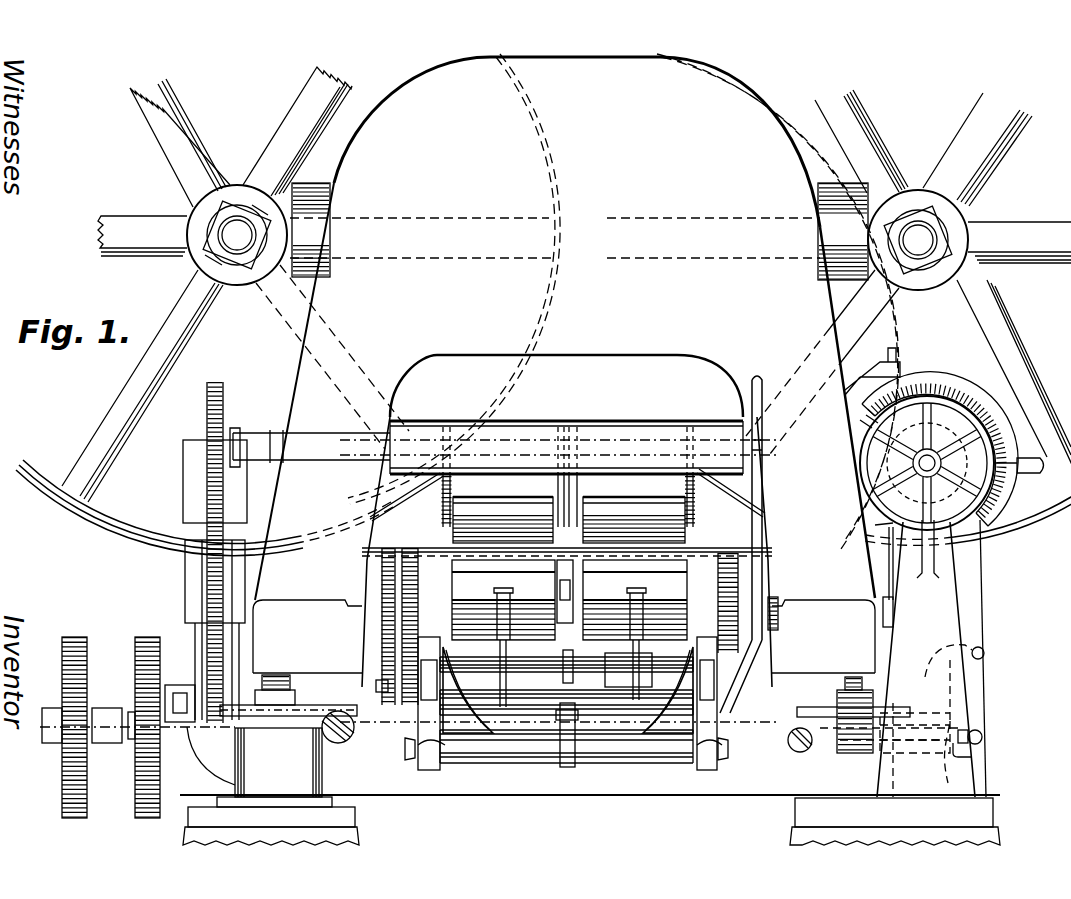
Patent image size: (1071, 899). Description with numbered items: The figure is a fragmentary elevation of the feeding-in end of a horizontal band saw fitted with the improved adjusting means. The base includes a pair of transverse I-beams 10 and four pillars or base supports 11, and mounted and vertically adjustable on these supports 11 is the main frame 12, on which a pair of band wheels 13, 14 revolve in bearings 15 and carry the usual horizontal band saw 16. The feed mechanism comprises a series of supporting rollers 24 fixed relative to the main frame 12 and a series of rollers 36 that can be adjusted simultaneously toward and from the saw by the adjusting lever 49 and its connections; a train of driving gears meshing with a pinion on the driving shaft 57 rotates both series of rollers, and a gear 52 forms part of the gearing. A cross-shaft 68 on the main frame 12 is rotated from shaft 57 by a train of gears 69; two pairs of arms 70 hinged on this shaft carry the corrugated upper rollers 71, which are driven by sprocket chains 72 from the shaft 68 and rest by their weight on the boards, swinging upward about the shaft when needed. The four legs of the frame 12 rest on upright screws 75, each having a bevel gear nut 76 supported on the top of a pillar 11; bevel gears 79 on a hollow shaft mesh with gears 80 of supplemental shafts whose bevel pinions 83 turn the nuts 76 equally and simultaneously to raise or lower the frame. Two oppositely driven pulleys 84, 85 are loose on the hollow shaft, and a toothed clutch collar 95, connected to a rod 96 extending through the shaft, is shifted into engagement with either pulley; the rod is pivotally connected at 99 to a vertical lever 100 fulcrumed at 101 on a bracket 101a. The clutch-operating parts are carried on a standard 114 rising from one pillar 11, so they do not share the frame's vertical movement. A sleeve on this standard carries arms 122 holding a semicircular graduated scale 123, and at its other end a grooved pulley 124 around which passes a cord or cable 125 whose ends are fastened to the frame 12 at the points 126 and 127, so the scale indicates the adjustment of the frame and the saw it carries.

The transverse I-beams 10 is at (560, 790).
The pillars or base supports 11 is at (358, 812).
The main frame 12 is at (565, 328).
The band wheel 13 is at (150, 226).
The band wheel 14 is at (998, 230).
The bearings 15 is at (203, 232).
The horizontal band saw 16 is at (443, 558).
The supporting rollers 24 is at (503, 633).
The rollers 36 is at (635, 630).
The adjusting lever 49 is at (764, 527).
The gear 52 is at (372, 688).
The driving shaft 57 is at (312, 705).
The cross-shaft 68 is at (303, 437).
The train of gears 69 is at (205, 570).
The arms 70 is at (441, 500).
The upper rollers 71 is at (569, 514).
The sprocket chains 72 is at (441, 520).
The upright screws 75 is at (292, 673).
The bevel gear nut 76 is at (268, 740).
The bevel gears 79 is at (410, 756).
The gears 80 is at (432, 760).
The bevel pinion 83 is at (340, 745).
The pulley 84 is at (73, 637).
The pulley 85 is at (143, 637).
The toothed clutch collar 95 is at (137, 729).
The rod 96 is at (972, 757).
The pivotal connection 99 is at (983, 737).
The vertical lever 100 is at (980, 620).
The fulcrum 101 is at (985, 652).
The bracket 101a is at (927, 683).
The standard 114 is at (943, 593).
The arms 122 is at (857, 428).
The graduated scale 123 is at (946, 395).
The grooved pulley 124 is at (960, 402).
The cord or cable 125 is at (890, 523).
The fastening point 126 is at (880, 363).
The fastening point 127 is at (883, 622).